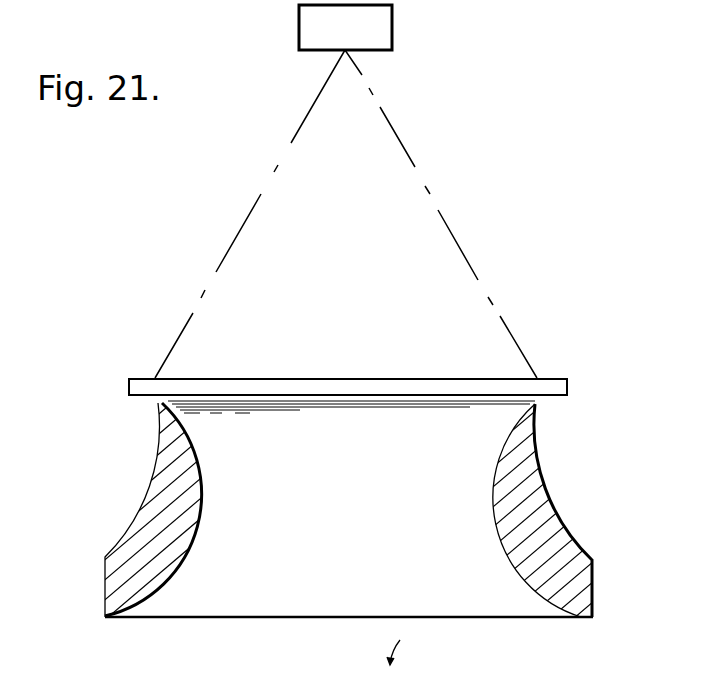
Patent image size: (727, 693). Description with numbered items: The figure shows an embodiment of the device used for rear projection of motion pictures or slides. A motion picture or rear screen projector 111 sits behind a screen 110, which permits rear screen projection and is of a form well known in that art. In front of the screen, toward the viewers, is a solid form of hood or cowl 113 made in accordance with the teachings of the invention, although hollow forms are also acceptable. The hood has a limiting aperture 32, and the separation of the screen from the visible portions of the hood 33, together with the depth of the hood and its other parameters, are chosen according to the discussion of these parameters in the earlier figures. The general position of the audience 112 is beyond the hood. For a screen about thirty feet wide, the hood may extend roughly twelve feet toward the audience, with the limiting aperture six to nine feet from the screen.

The rear screen projector 111 is at (392, 27).
The screen 110 is at (375, 379).
The visible portions of hood 33 is at (196, 404).
The limiting aperture 32 is at (494, 474).
The solid form of hood or cowl 113 is at (526, 571).
The audience position 112 is at (461, 647).